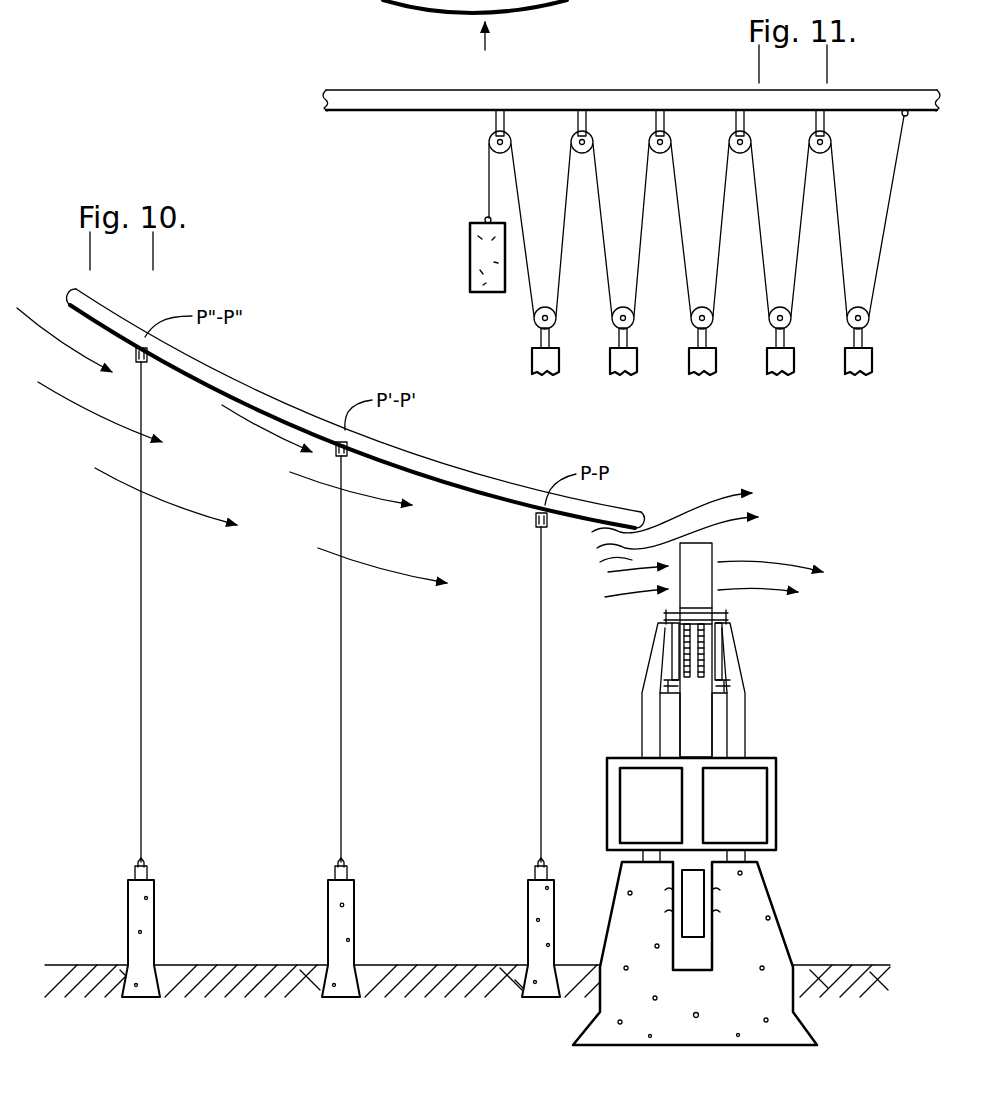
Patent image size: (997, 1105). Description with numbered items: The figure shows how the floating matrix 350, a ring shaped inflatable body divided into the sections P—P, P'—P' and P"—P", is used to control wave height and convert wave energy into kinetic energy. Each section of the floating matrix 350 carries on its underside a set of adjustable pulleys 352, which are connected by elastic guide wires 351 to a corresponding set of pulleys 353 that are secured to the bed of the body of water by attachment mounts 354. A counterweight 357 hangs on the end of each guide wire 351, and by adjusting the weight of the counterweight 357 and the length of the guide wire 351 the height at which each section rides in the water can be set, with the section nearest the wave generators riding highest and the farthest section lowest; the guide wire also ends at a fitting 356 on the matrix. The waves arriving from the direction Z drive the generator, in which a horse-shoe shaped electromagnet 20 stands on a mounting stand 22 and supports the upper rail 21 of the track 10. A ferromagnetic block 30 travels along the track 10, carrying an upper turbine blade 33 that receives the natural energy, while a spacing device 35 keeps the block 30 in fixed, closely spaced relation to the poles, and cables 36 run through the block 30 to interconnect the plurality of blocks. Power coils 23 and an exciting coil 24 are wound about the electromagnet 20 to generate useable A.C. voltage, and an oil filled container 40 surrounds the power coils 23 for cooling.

In FIG. 11, the track 10 is at (537, 18).
In FIG. 10, the horse-shoe shaped electromagnet 20 is at (745, 718).
In FIG. 10, the upper rail 21 is at (728, 622).
In FIG. 10, the mounting stand 22 is at (778, 915).
In FIG. 10, the power coil 23 is at (632, 800).
In FIG. 10, the exciting coil 24 is at (698, 931).
In FIG. 10, the block 30 is at (722, 678).
In FIG. 10, the upper turbine blade 33 is at (713, 548).
In FIG. 10, the spacing device 35 is at (675, 635).
In FIG. 10, the cable 36 is at (690, 644).
In FIG. 10, the oil filled container 40 is at (777, 772).
In FIG. 11, the floating matrix 350 is at (623, 106).
In FIG. 10, the floating matrix 350 is at (356, 408).
In FIG. 11, the elastic guide wire 351 is at (676, 197).
In FIG. 10, the elastic guide wire 351 is at (148, 722).
In FIG. 11, the adjustable pulley 352 is at (575, 146).
In FIG. 10, the adjustable pulley 352 is at (150, 358).
In FIG. 11, the pulley 353 is at (536, 323).
In FIG. 10, the pulley 353 is at (150, 865).
In FIG. 11, the attachment mount 354 is at (533, 361).
In FIG. 10, the attachment mount 354 is at (150, 915).
In FIG. 11, the cable hook 356 is at (909, 118).
In FIG. 11, the counterweight 357 is at (470, 242).